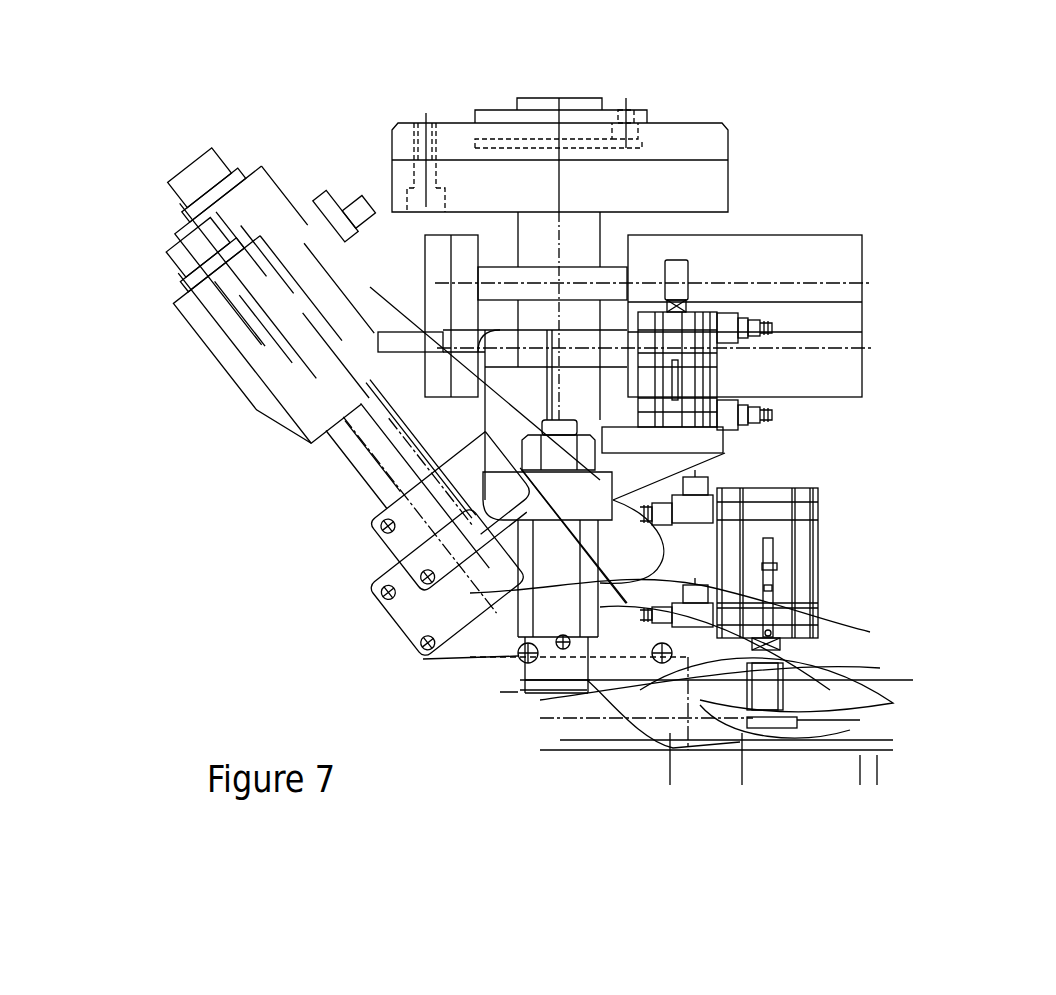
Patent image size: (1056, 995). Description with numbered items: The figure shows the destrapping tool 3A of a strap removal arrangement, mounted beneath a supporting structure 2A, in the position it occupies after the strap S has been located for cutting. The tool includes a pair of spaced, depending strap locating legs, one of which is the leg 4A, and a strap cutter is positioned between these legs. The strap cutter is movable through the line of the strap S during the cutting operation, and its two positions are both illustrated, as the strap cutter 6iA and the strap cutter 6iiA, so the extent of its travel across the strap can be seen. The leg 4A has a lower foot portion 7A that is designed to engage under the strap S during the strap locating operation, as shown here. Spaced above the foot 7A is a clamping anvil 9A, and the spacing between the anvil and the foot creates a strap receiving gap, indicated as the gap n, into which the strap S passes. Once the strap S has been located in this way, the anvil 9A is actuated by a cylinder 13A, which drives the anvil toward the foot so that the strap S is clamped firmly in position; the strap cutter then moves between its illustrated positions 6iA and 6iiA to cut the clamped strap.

The mounting base 2A is at (670, 130).
The destrapping tool 3A is at (790, 442).
The strap locating leg 4A is at (817, 568).
The cylinder 13A is at (772, 602).
The clamping anvil 9A is at (362, 474).
The strap S is at (876, 668).
The strap cutter 6iA is at (637, 737).
The strap cutter 6iiA is at (876, 669).
The foot portion 7A is at (770, 745).
The gap n is at (857, 743).